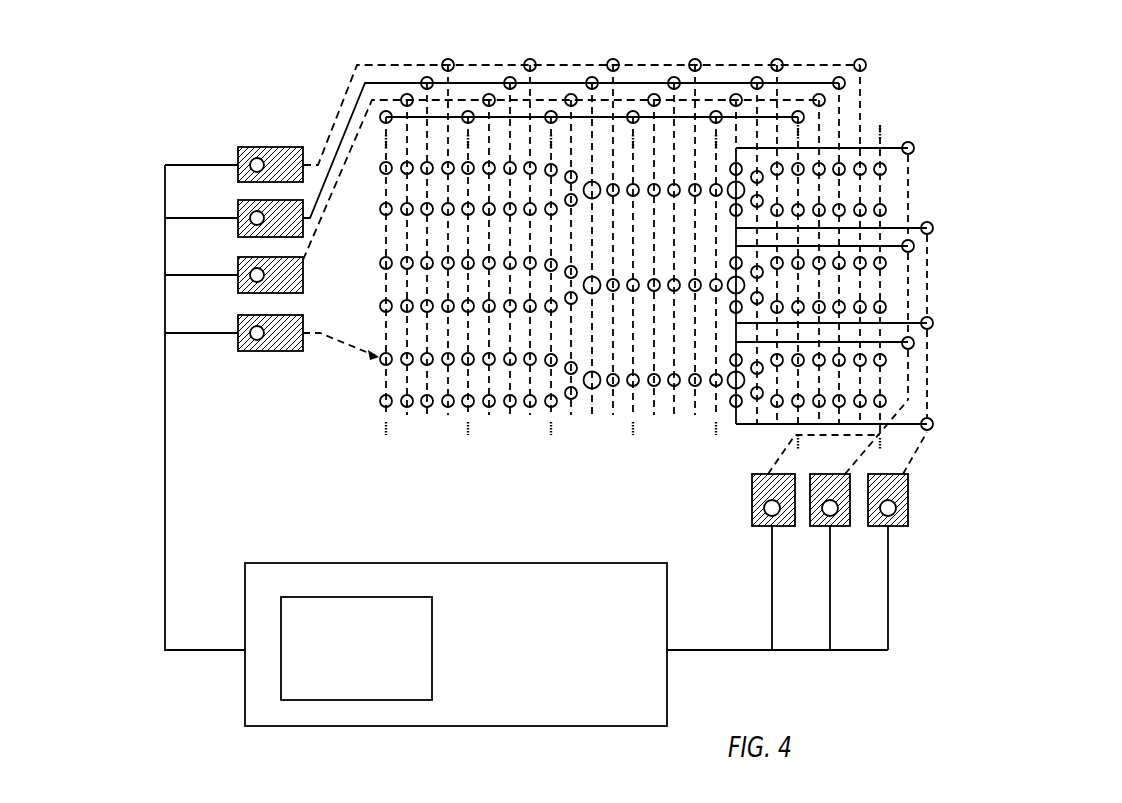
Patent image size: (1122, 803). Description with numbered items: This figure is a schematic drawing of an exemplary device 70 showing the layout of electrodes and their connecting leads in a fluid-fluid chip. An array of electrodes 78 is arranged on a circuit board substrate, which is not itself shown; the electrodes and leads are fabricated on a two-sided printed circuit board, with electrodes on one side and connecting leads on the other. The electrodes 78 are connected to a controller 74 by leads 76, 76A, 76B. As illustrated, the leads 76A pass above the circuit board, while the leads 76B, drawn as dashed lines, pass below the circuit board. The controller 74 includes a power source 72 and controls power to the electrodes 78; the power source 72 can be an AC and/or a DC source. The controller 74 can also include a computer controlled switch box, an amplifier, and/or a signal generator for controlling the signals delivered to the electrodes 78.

The device 70 is at (1020, 131).
The power source 72 is at (367, 671).
The controller 74 is at (558, 670).
The leads 76 is at (165, 328).
The leads 76A is at (655, 65).
The leads 76B is at (694, 352).
The electrodes 78 is at (508, 62).